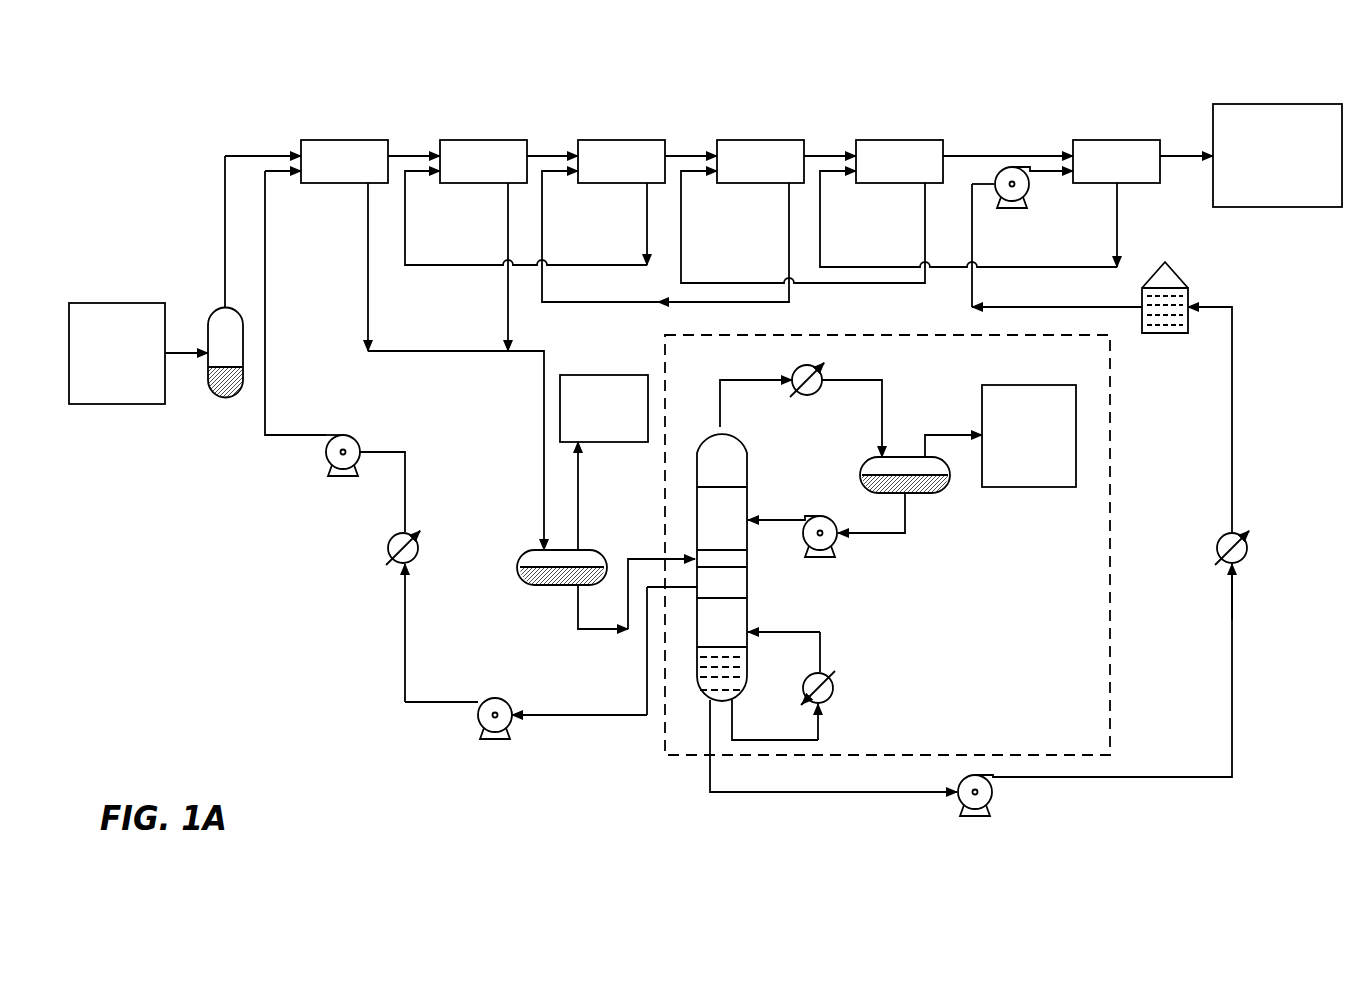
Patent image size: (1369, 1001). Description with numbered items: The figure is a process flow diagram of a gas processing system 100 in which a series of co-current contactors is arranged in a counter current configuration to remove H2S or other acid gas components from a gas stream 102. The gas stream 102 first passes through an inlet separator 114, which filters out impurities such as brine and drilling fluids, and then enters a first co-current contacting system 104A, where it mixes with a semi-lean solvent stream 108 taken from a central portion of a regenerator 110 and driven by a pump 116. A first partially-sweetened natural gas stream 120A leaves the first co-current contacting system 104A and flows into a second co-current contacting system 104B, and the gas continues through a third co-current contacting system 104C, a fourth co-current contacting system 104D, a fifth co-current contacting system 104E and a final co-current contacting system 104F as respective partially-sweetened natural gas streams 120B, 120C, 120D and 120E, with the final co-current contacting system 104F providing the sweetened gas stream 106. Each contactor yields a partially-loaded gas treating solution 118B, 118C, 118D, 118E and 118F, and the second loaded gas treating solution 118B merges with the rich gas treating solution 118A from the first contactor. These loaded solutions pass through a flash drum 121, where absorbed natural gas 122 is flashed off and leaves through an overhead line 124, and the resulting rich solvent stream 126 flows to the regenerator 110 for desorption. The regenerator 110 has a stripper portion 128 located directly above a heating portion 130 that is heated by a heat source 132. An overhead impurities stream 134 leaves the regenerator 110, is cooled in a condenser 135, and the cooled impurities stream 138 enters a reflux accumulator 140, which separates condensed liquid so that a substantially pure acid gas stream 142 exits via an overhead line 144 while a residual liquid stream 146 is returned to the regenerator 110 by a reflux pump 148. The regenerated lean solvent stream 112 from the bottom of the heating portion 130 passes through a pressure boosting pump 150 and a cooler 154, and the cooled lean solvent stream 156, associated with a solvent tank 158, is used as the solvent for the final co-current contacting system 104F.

The gas processing system 100 is at (168, 55).
The gas stream 102 is at (115, 303).
The first co-current contacting system 104A is at (370, 140).
The second co-current contacting system 104B is at (509, 140).
The third co-current contacting system 104C is at (647, 140).
The fourth co-current contacting system 104D is at (786, 140).
The fifth co-current contacting system 104E is at (924, 140).
The final co-current contacting system 104F is at (1139, 140).
The sweetened gas stream 106 is at (1292, 104).
The solvent stream 108 is at (266, 270).
The regenerator 110 is at (1112, 422).
The lean solvent stream 112 is at (752, 794).
The inlet separator 114 is at (222, 397).
The pump 116 is at (354, 437).
The rich gas treating solution 118A is at (402, 351).
The second partially-loaded gas treating solution 118B is at (505, 238).
The partially-loaded gas treating solution 118C is at (644, 238).
The partially-loaded gas treating solution 118D is at (786, 238).
The partially-loaded gas treating solution 118E is at (922, 238).
The partially-loaded gas treating solution 118F is at (1114, 238).
The first partially-sweetened natural gas stream 120A is at (400, 155).
The partially-sweetened natural gas stream 120B is at (539, 155).
The partially-sweetened natural gas stream 120C is at (678, 155).
The partially-sweetened natural gas stream 120D is at (818, 155).
The partially-sweetened natural gas stream 120E is at (986, 155).
The flash drum 121 is at (522, 584).
The absorbed natural gas 122 is at (600, 375).
The overhead line 124 is at (603, 508).
The rich solvent stream 126 is at (580, 635).
The stripper portion 128 is at (749, 580).
The heating portion 130 is at (749, 613).
The heat source 132 is at (830, 700).
The overhead impurities stream 134 is at (743, 378).
The condenser 135 is at (818, 394).
The cooled impurities stream 138 is at (852, 378).
The reflux accumulator 140 is at (942, 493).
The acid gas stream 142 is at (1030, 385).
The overhead line 144 is at (944, 433).
The residual liquid stream 146 is at (892, 538).
The reflux pump 148 is at (804, 514).
The pressure boosting pump 150 is at (972, 817).
The cooler 154 is at (1218, 543).
The cooled lean solvent stream 156 is at (1025, 307).
The solvent tank 158 is at (1178, 280).